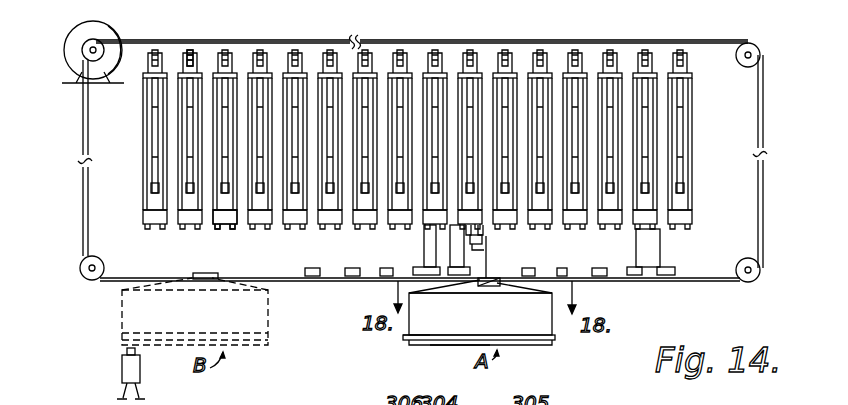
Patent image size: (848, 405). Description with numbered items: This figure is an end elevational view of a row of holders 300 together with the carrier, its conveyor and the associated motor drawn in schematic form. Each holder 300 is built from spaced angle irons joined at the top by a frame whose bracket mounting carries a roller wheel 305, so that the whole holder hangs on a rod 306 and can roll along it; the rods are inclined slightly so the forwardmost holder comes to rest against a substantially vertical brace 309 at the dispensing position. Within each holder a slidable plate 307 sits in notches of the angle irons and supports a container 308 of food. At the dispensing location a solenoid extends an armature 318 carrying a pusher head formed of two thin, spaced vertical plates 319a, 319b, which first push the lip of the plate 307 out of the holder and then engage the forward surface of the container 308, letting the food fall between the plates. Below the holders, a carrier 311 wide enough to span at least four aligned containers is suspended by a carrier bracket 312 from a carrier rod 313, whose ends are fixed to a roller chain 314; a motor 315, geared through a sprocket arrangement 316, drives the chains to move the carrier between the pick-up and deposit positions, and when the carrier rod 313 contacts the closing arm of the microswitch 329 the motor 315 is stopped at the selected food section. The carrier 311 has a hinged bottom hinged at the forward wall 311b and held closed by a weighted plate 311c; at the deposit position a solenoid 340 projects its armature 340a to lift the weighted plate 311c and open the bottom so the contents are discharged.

The holder 300 is at (130, 157).
The roller wheel 305 is at (191, 51).
The rod 306 is at (288, 58).
The plate 307 is at (150, 228).
The container 308 is at (216, 222).
The brace 309 is at (156, 176).
The carrier 311 is at (548, 326).
The forward wall hinge 311b is at (406, 340).
The plate and weight combination 311c is at (462, 345).
The carrier bracket 312 is at (446, 287).
The carrier rod 313 is at (481, 283).
The roller chain 314 is at (420, 42).
The motor 315 is at (68, 43).
The sprocket arrangement 316 is at (88, 52).
The armature 318 is at (482, 243).
The pusher head plate 319a is at (484, 229).
The pusher head plate 319b is at (466, 231).
The microswitch 329 is at (350, 282).
The solenoid 340 is at (122, 370).
The armature 340a is at (126, 352).